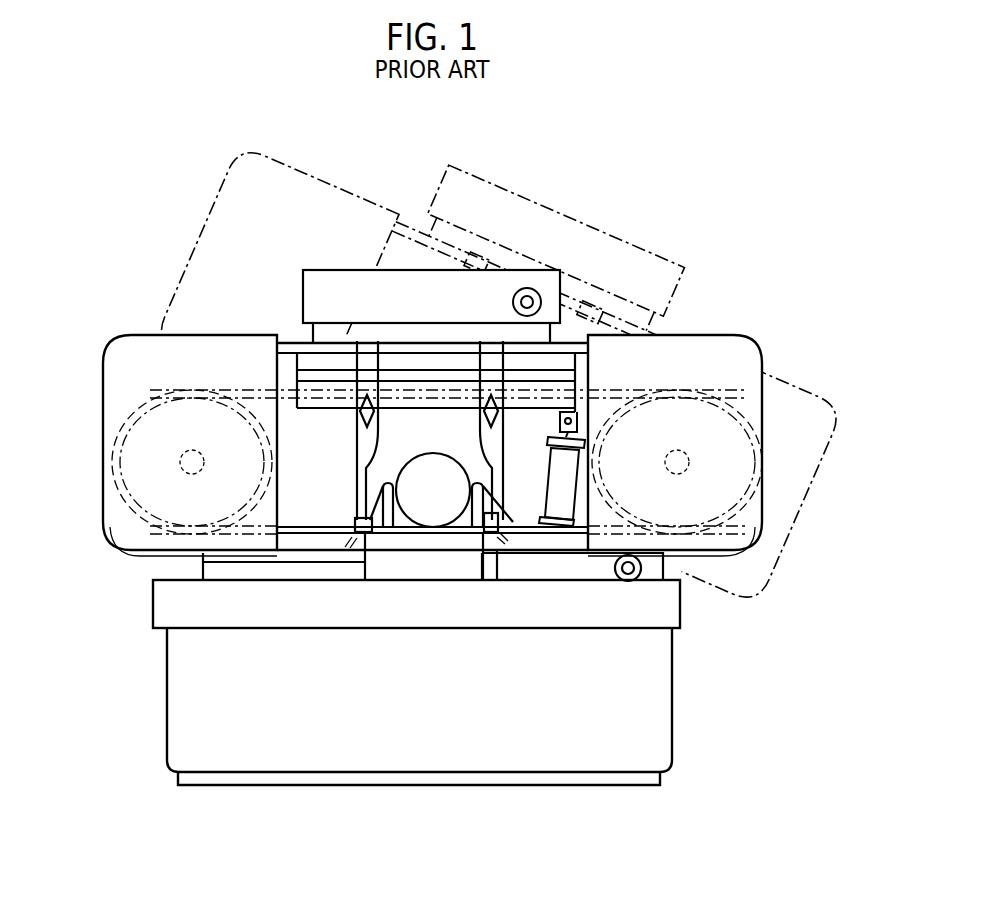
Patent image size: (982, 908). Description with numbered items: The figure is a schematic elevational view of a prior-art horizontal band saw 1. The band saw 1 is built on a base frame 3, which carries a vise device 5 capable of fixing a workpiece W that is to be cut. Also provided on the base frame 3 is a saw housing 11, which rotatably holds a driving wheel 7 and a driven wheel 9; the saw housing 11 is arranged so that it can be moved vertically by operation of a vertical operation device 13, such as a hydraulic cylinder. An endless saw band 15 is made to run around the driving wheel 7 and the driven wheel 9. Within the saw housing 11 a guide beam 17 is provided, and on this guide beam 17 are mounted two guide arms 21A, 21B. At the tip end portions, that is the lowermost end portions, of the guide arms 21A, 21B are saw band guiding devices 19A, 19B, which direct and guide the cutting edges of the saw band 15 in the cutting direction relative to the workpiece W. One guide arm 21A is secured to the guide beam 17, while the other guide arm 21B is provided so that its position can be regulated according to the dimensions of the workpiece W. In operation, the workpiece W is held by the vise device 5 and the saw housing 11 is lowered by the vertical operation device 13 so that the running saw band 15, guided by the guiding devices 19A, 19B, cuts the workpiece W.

The band saw 1 is at (727, 308).
The base frame 3 is at (658, 666).
The vise device 5 is at (380, 478).
The driving wheel 7 is at (733, 515).
The driven wheel 9 is at (130, 411).
The saw housing 11 is at (757, 323).
The vertical operation device 13 is at (558, 530).
The saw band 15 is at (312, 550).
The guide beam 17 is at (307, 352).
The saw band guiding device 19A is at (497, 545).
The saw band guiding device 19B is at (356, 545).
The guide arm 21A is at (488, 355).
The guide arm 21B is at (367, 355).
The workpiece W is at (441, 468).